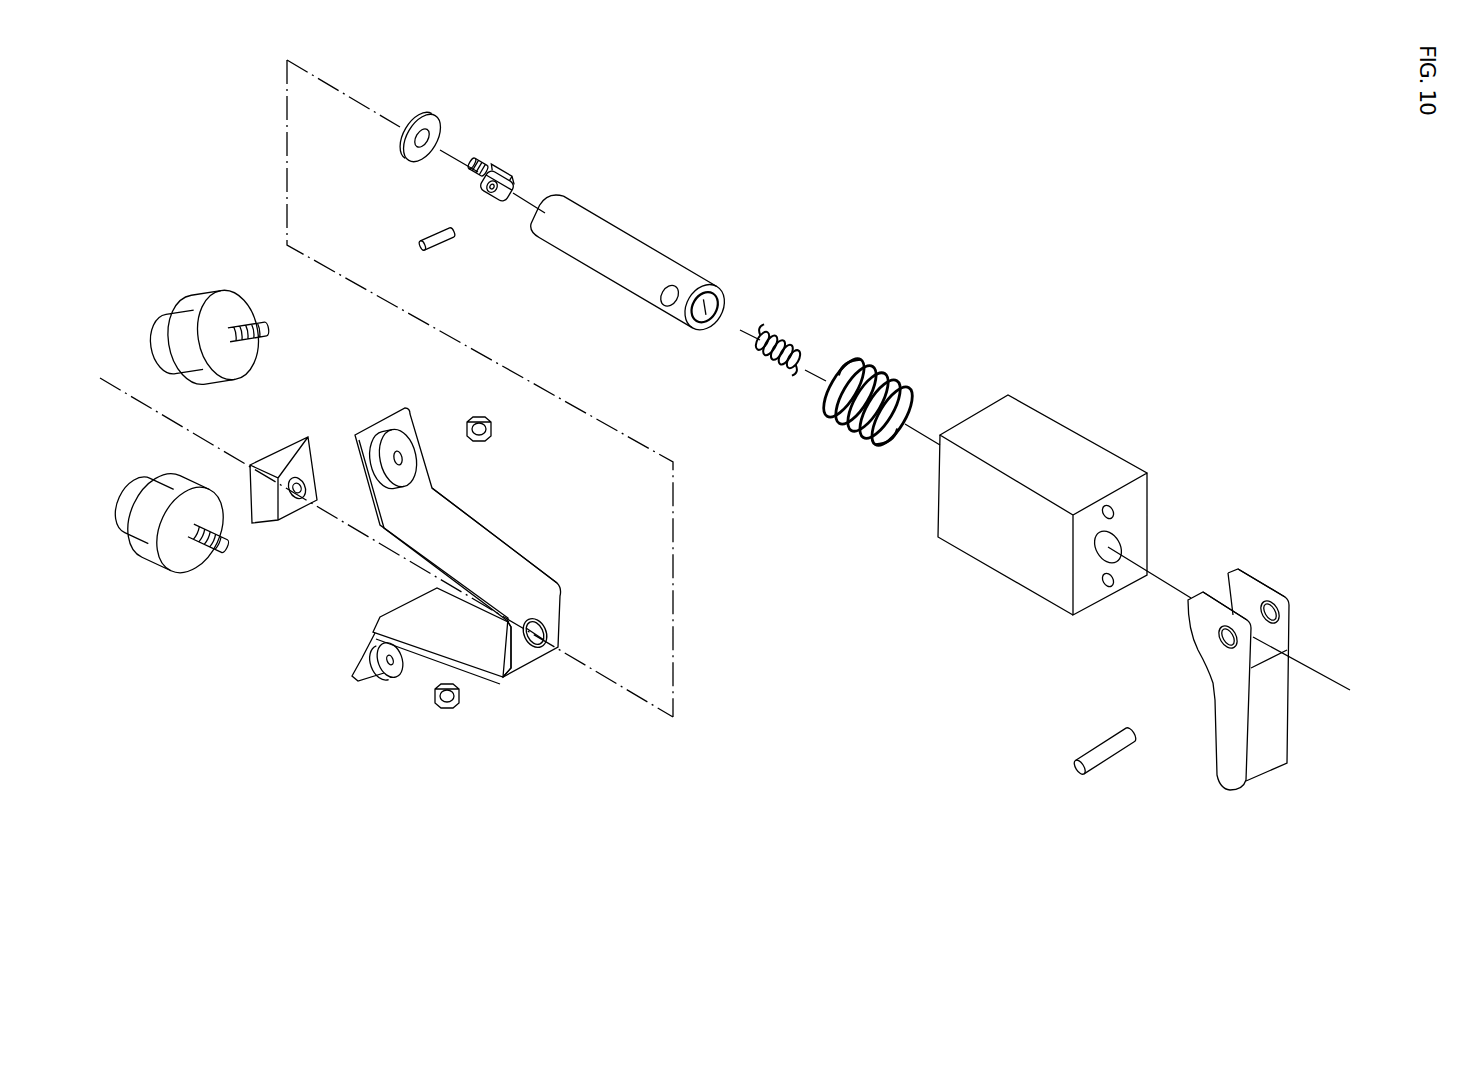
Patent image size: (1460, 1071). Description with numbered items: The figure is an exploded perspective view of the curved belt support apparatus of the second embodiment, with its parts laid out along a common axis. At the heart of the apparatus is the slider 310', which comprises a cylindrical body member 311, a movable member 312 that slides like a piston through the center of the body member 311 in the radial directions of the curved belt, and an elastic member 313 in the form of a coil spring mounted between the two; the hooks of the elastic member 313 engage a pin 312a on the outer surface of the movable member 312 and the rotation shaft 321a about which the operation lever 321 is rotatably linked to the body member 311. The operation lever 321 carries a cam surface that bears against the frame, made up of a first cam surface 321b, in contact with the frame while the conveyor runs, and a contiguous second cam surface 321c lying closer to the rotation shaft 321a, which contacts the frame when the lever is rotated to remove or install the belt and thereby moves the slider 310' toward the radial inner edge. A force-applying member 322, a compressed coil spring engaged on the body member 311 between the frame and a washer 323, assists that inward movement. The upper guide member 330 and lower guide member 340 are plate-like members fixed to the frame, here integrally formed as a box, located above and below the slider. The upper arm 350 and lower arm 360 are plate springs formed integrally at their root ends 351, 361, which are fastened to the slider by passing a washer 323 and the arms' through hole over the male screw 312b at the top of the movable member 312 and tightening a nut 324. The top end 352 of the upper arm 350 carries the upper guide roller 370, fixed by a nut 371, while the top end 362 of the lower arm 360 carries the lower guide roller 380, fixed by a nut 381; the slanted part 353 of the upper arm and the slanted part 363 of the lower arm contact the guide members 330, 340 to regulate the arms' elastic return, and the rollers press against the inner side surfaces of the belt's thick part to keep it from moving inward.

The slider 310' is at (634, 248).
The body member 311 is at (640, 258).
The movable member 312 is at (518, 186).
The pin 312a is at (444, 250).
The male screw 312b is at (483, 163).
The elastic member 313 is at (783, 327).
The operation lever 321 is at (1284, 636).
The rotation shaft 321a is at (1105, 750).
The first cam surface 321b is at (1228, 573).
The second cam surface 321c is at (1286, 592).
The force-applying member 322 is at (885, 365).
The washer 323 is at (403, 150).
The nut 324 is at (278, 450).
The upper guide member 330 is at (1032, 483).
The lower guide member 340 is at (1007, 582).
The upper arm 350 is at (493, 519).
The root end 351 is at (540, 602).
The top end 352 is at (390, 410).
The slanted part 353 is at (500, 558).
The lower arm 360 is at (444, 694).
The root end 361 is at (529, 689).
The top end 362 is at (364, 680).
The slanted part 363 is at (482, 668).
The upper guide roller 370 is at (243, 294).
The nut 371 is at (488, 427).
The lower guide roller 380 is at (184, 588).
The nut 381 is at (448, 712).